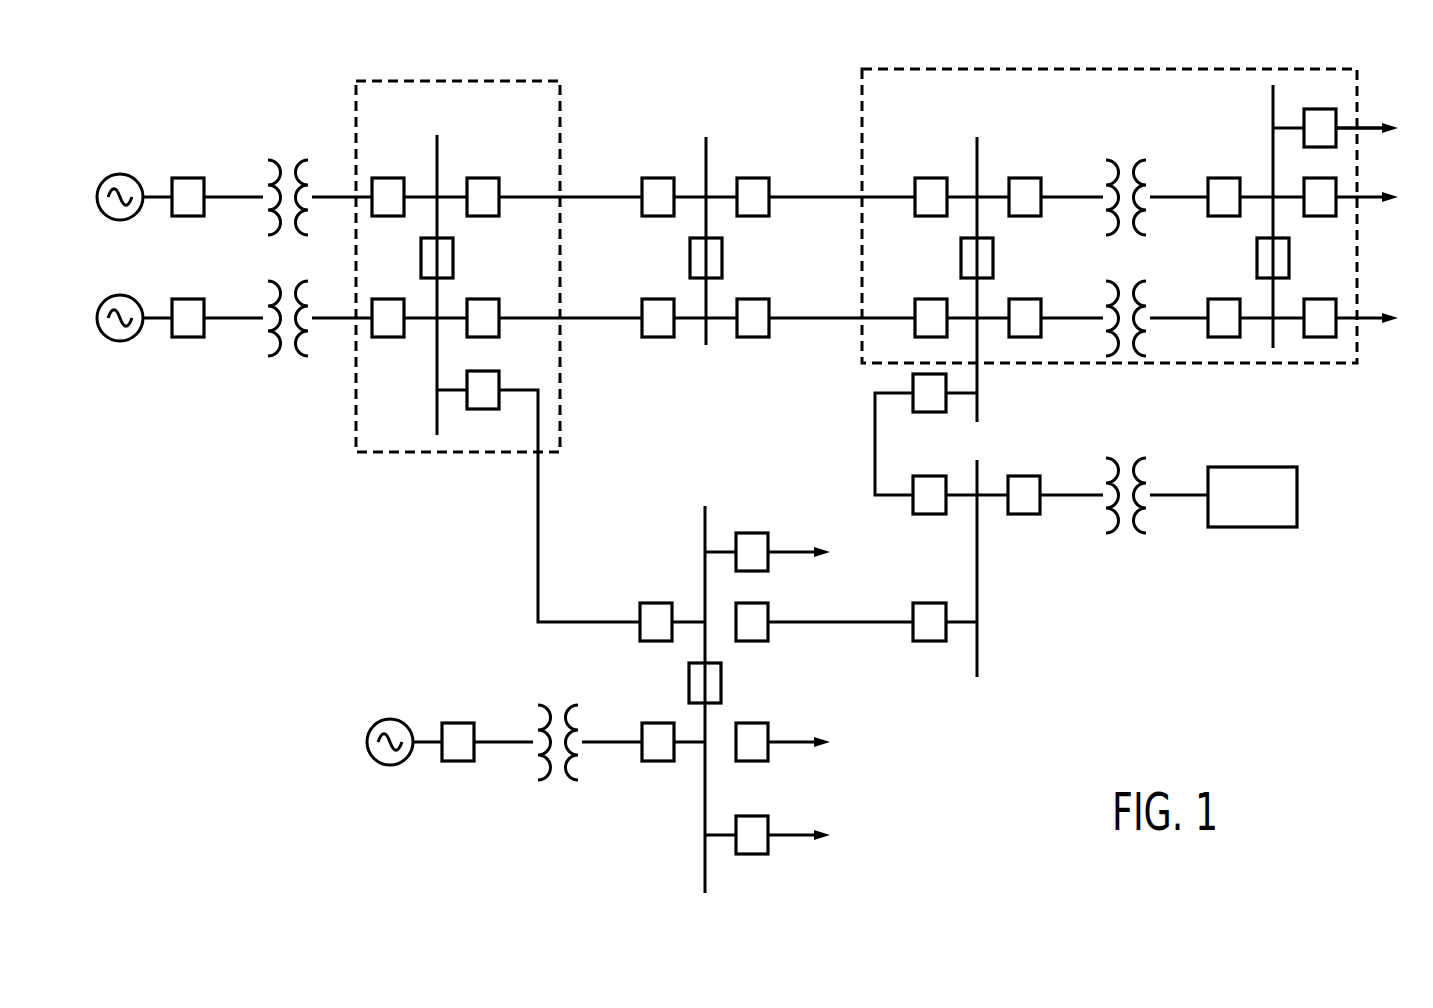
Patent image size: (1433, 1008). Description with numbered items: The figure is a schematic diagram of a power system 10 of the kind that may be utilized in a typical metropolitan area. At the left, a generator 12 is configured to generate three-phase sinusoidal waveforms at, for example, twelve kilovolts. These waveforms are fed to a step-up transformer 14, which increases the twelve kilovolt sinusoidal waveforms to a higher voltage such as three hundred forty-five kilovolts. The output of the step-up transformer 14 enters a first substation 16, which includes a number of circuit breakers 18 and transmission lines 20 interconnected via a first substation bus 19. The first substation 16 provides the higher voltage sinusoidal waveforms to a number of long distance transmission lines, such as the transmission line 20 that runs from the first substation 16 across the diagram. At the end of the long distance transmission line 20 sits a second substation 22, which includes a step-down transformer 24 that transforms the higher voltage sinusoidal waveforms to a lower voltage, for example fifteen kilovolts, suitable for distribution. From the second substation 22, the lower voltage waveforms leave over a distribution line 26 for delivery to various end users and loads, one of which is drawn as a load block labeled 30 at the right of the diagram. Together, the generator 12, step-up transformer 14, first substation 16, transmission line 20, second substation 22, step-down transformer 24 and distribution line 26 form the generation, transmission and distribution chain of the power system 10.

The power system 10 is at (781, 83).
The generator 12 is at (120, 219).
The step-up transformer 14 is at (287, 153).
The first substation 16 is at (562, 138).
The circuit breaker 18 is at (481, 216).
The first substation bus 19 is at (435, 152).
The transmission line 20 is at (603, 195).
The second substation 22 is at (1172, 68).
The step-down transformer 24 is at (1123, 157).
The distribution line 26 is at (1372, 132).
The load 30 is at (1297, 497).